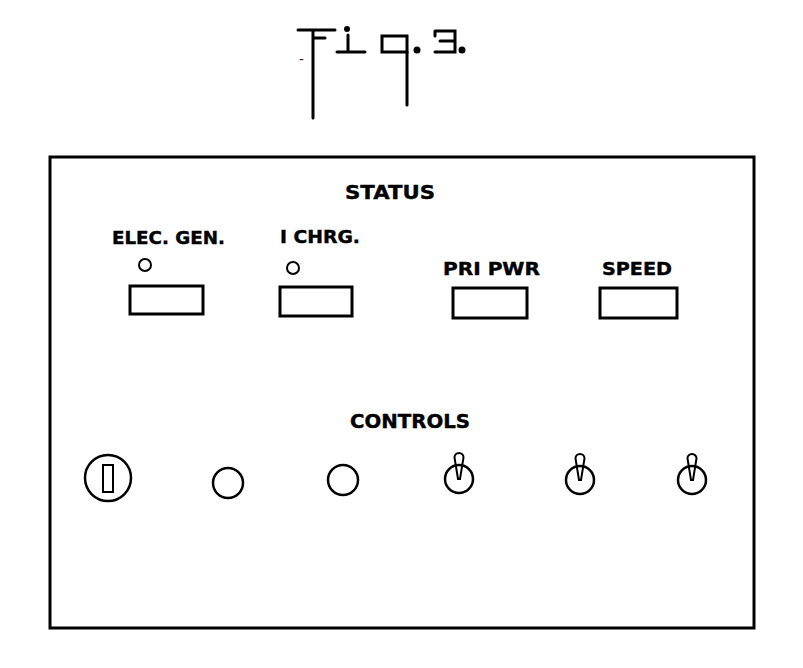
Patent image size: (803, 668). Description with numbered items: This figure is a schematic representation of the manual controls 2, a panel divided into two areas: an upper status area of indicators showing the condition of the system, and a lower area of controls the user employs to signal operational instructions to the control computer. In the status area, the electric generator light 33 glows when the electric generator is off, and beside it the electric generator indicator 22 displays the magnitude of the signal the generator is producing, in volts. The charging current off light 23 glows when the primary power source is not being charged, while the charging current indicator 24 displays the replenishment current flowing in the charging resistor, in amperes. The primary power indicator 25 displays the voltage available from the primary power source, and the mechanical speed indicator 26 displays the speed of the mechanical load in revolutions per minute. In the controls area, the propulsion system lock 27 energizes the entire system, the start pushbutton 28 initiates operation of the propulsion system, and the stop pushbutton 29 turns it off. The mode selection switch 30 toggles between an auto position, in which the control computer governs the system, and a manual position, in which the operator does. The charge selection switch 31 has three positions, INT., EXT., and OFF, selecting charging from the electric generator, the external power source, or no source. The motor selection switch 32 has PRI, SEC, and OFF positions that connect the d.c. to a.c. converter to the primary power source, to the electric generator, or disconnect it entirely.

The manual controls 2 is at (48, 425).
The electric generator indicator 22 is at (143, 314).
The charging current off light 23 is at (286, 269).
The charging current indicator 24 is at (290, 316).
The primary power indicator 25 is at (455, 318).
The mechanical speed indicator 26 is at (600, 318).
The propulsion system lock 27 is at (130, 468).
The start pushbutton 28 is at (243, 475).
The stop pushbutton 29 is at (357, 470).
The mode selection switch 30 is at (445, 472).
The charge selection switch 31 is at (568, 472).
The motor selection switch 32 is at (679, 471).
The electric generator light 33 is at (138, 265).